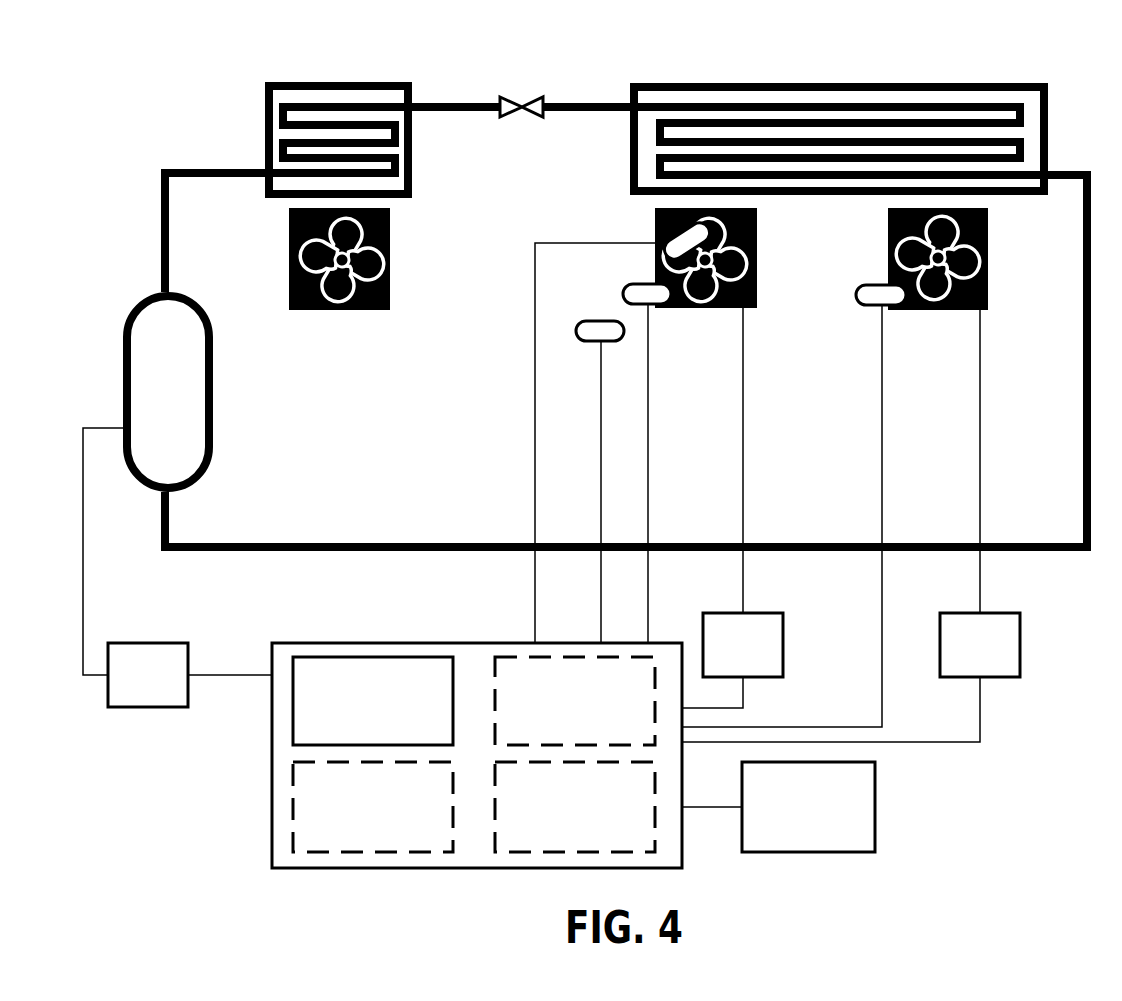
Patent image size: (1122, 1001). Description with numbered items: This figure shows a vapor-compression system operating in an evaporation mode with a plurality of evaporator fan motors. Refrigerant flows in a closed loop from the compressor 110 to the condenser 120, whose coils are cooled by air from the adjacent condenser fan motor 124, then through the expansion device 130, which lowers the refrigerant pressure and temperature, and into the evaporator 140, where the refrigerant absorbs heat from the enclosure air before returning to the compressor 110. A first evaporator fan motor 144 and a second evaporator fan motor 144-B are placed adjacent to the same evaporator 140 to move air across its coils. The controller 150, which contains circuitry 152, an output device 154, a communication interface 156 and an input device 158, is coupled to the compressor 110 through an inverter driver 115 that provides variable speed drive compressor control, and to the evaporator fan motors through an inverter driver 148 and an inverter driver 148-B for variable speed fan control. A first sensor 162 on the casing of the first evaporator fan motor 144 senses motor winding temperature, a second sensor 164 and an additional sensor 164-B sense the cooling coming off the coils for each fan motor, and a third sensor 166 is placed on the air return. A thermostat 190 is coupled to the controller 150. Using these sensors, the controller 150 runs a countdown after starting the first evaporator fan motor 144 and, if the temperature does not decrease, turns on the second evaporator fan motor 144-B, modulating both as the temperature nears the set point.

The compressor 110 is at (213, 400).
The inverter driver 115 is at (190, 652).
The condenser 120 is at (283, 82).
The condenser fan motor 124 is at (375, 275).
The expansion device 130 is at (505, 100).
The evaporator 140 is at (808, 82).
The first evaporator fan motor 144 is at (750, 268).
The second evaporator fan motor 144-B is at (985, 278).
The inverter driver 148 is at (785, 623).
The inverter driver 148-B is at (1022, 623).
The controller 150 is at (477, 731).
The circuitry 152 is at (373, 701).
The output device 154 is at (373, 807).
The communication interface 156 is at (575, 701).
The input device 158 is at (575, 807).
The first sensor 162 is at (670, 240).
The second sensor 164 is at (663, 305).
The additional sensor 164-B is at (895, 305).
The third sensor 166 is at (600, 342).
The thermostat 190 is at (778, 807).